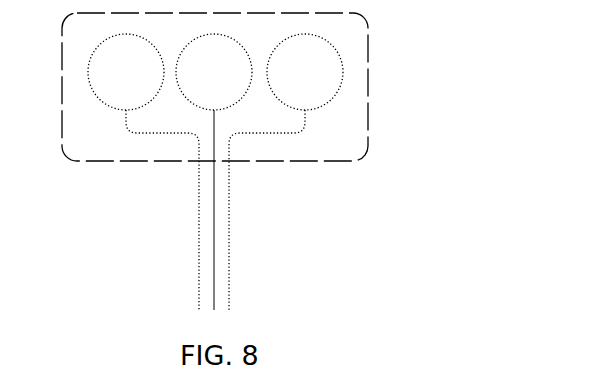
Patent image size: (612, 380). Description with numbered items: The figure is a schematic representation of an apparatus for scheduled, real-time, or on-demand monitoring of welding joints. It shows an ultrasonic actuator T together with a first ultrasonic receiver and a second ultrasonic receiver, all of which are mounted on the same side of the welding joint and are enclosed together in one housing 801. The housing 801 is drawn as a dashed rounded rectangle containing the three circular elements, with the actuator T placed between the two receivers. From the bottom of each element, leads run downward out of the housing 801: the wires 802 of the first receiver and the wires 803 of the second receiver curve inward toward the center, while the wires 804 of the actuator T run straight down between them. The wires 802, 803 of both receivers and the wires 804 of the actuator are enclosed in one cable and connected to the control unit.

The housing 801 is at (368, 53).
The wires of first receiver 802 is at (200, 260).
The wires of second receiver 803 is at (229, 208).
The wires of actuator 804 is at (215, 263).